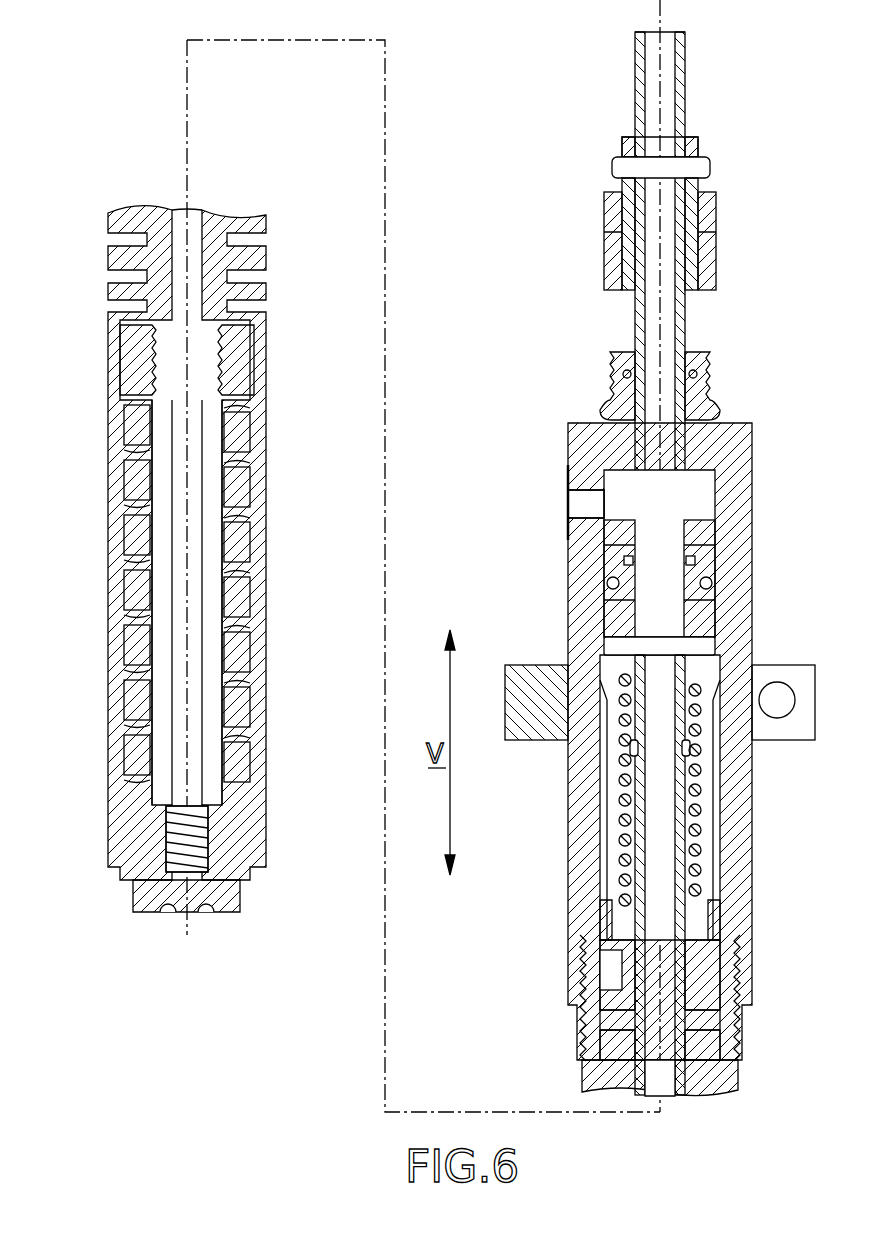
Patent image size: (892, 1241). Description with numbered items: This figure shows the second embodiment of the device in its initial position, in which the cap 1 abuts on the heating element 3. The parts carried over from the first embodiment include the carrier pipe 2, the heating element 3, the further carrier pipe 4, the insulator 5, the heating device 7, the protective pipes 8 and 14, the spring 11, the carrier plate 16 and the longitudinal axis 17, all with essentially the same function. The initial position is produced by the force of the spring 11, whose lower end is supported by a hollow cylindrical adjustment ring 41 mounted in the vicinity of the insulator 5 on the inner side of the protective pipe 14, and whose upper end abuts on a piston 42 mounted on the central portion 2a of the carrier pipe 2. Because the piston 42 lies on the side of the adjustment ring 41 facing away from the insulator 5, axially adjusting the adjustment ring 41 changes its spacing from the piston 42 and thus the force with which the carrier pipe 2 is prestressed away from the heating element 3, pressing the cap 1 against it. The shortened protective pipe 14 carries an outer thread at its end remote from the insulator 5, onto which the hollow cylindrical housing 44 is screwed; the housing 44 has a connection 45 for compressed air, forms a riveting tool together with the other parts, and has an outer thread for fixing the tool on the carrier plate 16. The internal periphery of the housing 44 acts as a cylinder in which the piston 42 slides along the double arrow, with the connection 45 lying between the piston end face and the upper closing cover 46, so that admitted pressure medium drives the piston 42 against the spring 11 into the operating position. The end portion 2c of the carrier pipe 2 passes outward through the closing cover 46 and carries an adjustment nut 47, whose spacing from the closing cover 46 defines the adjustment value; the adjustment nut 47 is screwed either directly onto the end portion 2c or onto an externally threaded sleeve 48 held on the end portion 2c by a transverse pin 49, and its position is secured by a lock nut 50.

The cap 1 is at (218, 892).
The carrier pipe 2 is at (632, 1090).
The central portion of the carrier pipe 2a is at (638, 822).
The end portion of the carrier pipe 2c is at (683, 62).
The heating element 3 is at (235, 835).
The further carrier pipe 4 is at (150, 605).
The insulator 5 is at (118, 255).
The heating device 7 is at (138, 722).
The protective pipe 8 is at (122, 462).
The spring 11 is at (620, 757).
The protective pipe 14 is at (590, 968).
The carrier plate 16 is at (532, 685).
The longitudinal axis 17 is at (662, 2).
The adjustment ring 41 is at (700, 988).
The piston 42 is at (708, 598).
The housing 44 is at (738, 625).
The connection 45 is at (582, 498).
The closing cover 46 is at (582, 440).
The adjustment nut 47 is at (706, 262).
The sleeve 48 is at (697, 150).
The transverse pin 49 is at (613, 166).
The lock nut 50 is at (612, 207).